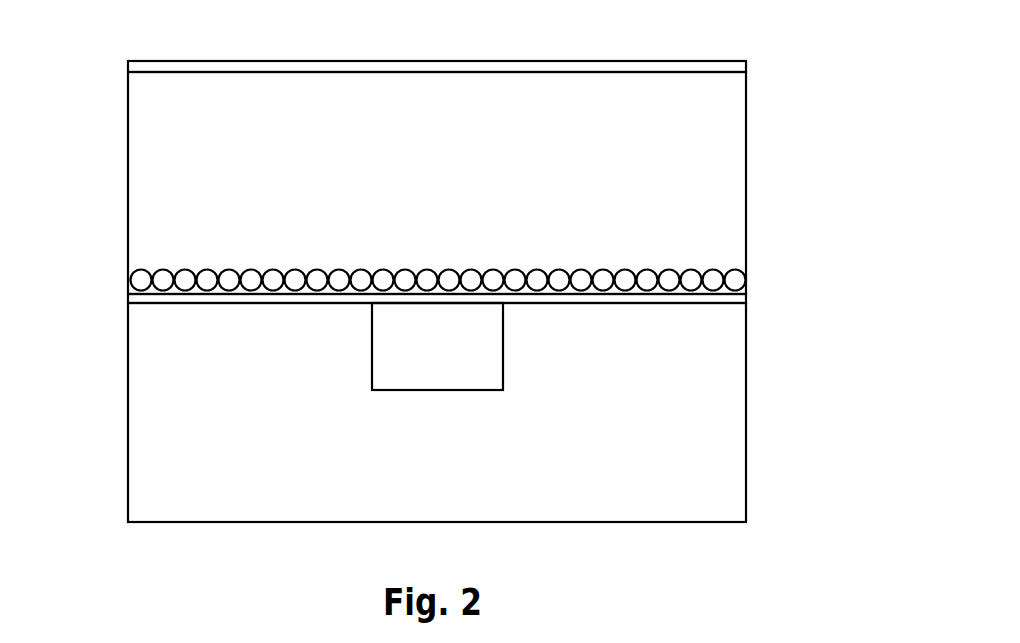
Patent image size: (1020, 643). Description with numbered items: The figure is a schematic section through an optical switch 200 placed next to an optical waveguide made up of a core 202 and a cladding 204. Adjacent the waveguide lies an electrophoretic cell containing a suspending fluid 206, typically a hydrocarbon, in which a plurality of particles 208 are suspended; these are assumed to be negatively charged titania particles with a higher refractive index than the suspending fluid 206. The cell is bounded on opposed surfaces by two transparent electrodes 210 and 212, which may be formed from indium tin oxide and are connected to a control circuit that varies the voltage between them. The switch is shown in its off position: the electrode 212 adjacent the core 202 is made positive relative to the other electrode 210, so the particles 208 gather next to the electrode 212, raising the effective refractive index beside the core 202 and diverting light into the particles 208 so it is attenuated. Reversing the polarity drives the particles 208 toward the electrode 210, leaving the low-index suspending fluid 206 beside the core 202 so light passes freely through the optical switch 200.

The optical switch 200 is at (92, 223).
The core 202 is at (463, 369).
The cladding 204 is at (463, 468).
The suspending fluid 206 is at (463, 193).
The particles 208 is at (580, 282).
The electrode 210 is at (650, 68).
The electrode 212 is at (652, 298).